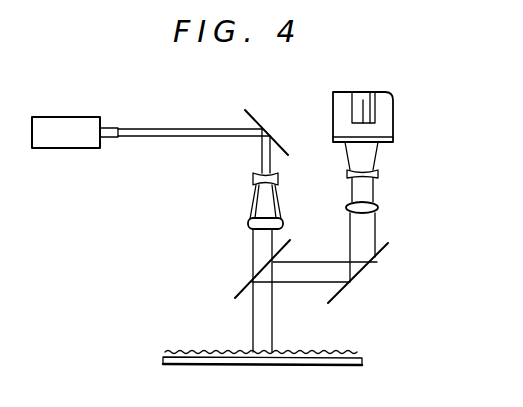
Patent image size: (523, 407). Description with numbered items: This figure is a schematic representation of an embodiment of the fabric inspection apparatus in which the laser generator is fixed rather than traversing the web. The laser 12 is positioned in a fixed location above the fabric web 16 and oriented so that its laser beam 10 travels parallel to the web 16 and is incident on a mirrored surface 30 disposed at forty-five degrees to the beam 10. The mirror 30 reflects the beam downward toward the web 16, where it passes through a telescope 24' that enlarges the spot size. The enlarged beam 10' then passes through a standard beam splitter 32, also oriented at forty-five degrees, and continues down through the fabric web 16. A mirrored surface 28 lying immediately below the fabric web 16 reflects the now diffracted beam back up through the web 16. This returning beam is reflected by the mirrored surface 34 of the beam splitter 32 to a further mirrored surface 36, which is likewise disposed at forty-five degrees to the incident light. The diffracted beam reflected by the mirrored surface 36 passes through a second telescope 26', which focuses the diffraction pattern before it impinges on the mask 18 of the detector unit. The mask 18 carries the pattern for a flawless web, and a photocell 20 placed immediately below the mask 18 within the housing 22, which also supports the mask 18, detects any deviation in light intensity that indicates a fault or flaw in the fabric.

The laser light beam 10 is at (194, 117).
The enlarged beam 10' is at (234, 290).
The laser 12 is at (88, 121).
The fabric web 16 is at (342, 353).
The mask 18 is at (395, 143).
The photocell 20 is at (383, 95).
The housing 22 is at (395, 110).
The telescope 24' is at (244, 201).
The second telescope 26' is at (391, 191).
The mirrored surface 28 is at (362, 364).
The mirrored surface 30 is at (267, 131).
The beam splitter 32 is at (248, 284).
The mirrored surface of beam splitter 34 is at (295, 240).
The mirrored surface 36 is at (383, 250).